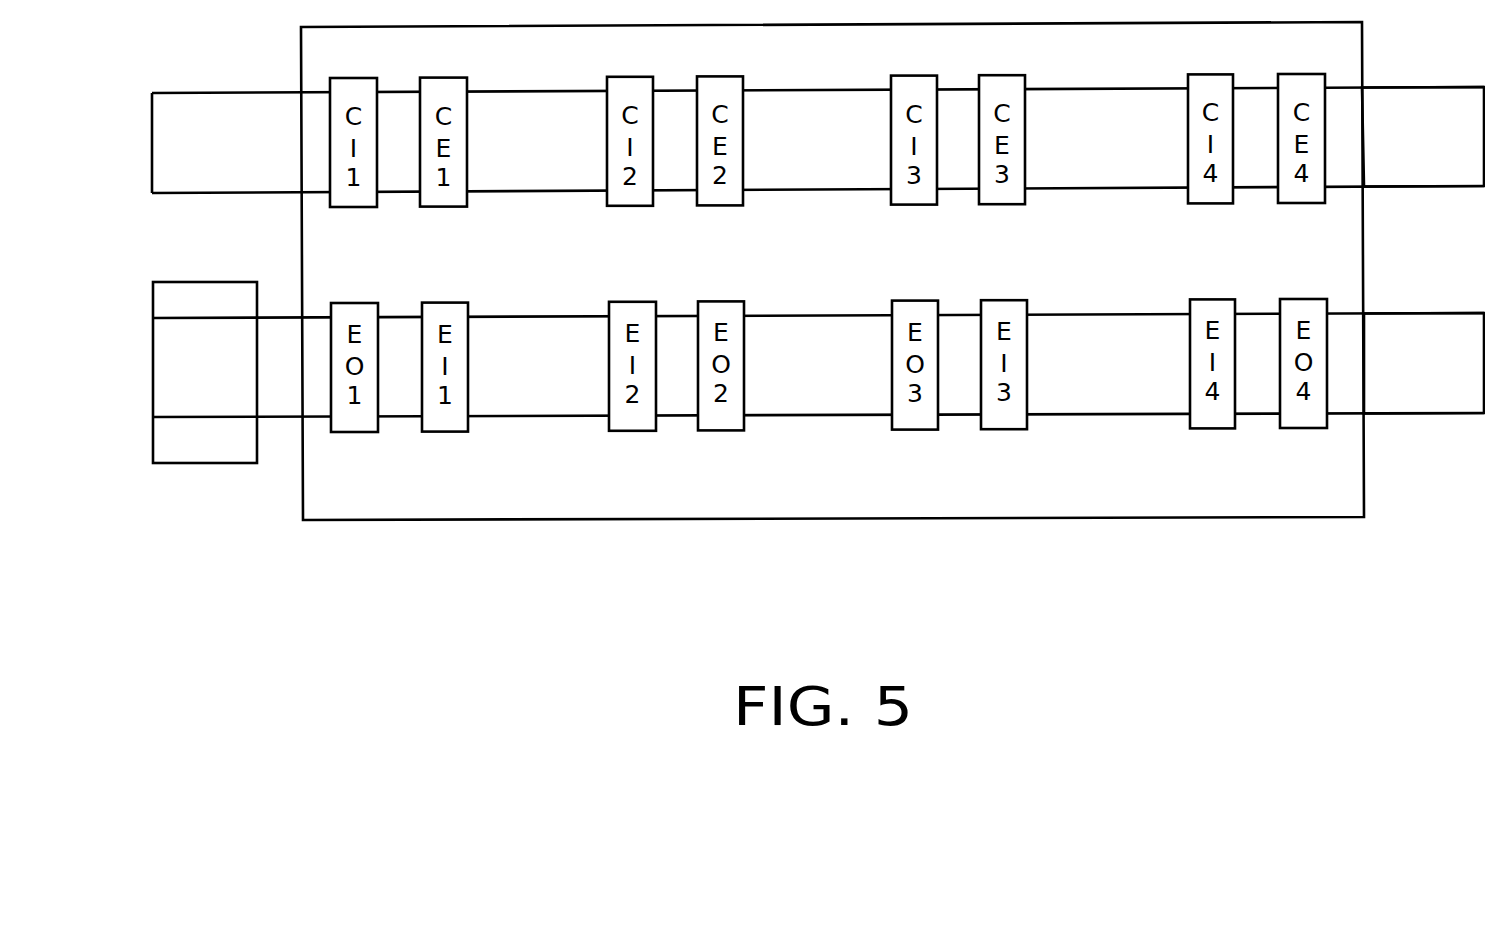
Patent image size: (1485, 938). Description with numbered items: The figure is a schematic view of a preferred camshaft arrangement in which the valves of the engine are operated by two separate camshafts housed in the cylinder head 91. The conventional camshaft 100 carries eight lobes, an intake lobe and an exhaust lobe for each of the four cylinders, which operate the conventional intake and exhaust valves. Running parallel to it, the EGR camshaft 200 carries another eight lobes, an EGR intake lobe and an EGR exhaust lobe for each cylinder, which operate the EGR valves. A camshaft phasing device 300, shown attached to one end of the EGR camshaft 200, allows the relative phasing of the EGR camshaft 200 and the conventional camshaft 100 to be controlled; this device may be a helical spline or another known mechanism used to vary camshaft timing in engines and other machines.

The cylinder head 91 is at (794, 264).
The conventional camshaft 100 is at (1416, 150).
The EGR camshaft 200 is at (1418, 374).
The camshaft phasing device 300 is at (185, 456).